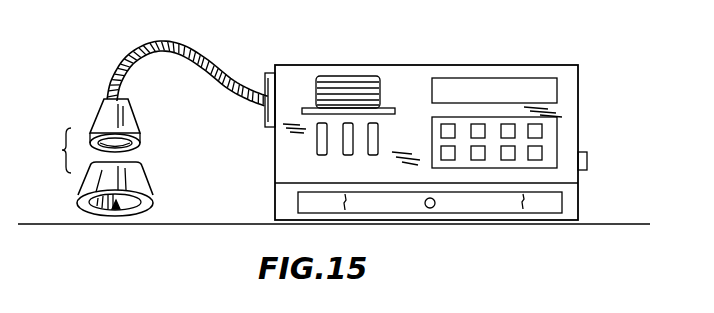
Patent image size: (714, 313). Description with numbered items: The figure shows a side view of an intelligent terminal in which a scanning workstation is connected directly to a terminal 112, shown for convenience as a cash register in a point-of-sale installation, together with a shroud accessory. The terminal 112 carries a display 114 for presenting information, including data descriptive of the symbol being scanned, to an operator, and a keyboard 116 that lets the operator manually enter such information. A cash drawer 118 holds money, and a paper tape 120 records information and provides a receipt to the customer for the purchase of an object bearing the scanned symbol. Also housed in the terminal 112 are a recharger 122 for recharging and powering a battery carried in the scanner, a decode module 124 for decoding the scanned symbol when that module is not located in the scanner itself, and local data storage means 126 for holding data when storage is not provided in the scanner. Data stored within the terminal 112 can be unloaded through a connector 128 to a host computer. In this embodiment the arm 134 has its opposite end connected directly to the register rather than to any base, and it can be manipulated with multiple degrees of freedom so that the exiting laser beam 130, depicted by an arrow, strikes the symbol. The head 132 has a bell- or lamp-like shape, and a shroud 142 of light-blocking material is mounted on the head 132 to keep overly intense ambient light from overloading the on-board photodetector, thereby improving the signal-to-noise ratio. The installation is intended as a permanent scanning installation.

The terminal 112 is at (462, 31).
The display 114 is at (523, 90).
The keyboard 116 is at (542, 128).
The cash drawer 118 is at (548, 201).
The paper tape 120 is at (362, 50).
The recharger 122 is at (318, 140).
The decode module 124 is at (348, 152).
The local data storage means 126 is at (378, 135).
The connector 128 is at (588, 157).
The exiting laser beam 130 is at (116, 208).
The head 132 is at (108, 115).
The arm 134 is at (195, 52).
The shroud 142 is at (140, 187).